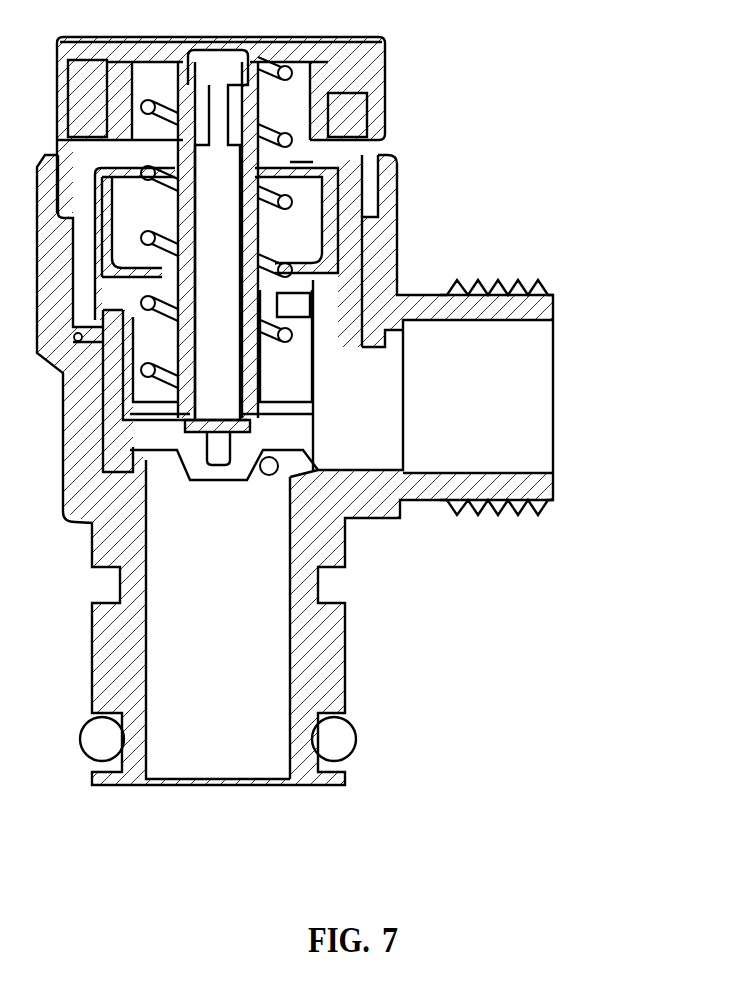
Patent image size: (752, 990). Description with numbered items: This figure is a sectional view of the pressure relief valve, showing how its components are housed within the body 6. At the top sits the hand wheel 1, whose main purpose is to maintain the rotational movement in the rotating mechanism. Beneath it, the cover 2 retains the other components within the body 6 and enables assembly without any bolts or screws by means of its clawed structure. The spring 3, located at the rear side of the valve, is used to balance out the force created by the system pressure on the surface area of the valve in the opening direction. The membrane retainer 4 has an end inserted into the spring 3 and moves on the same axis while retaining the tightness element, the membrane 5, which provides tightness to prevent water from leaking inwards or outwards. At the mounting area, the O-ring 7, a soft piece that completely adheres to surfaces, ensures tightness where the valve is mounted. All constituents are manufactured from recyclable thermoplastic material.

The hand wheel 1 is at (360, 52).
The cover 2 is at (307, 145).
The spring 3 is at (277, 269).
The membrane retainer 4 is at (217, 368).
The membrane 5 is at (285, 430).
The body 6 is at (318, 622).
The O-ring 7 is at (338, 745).